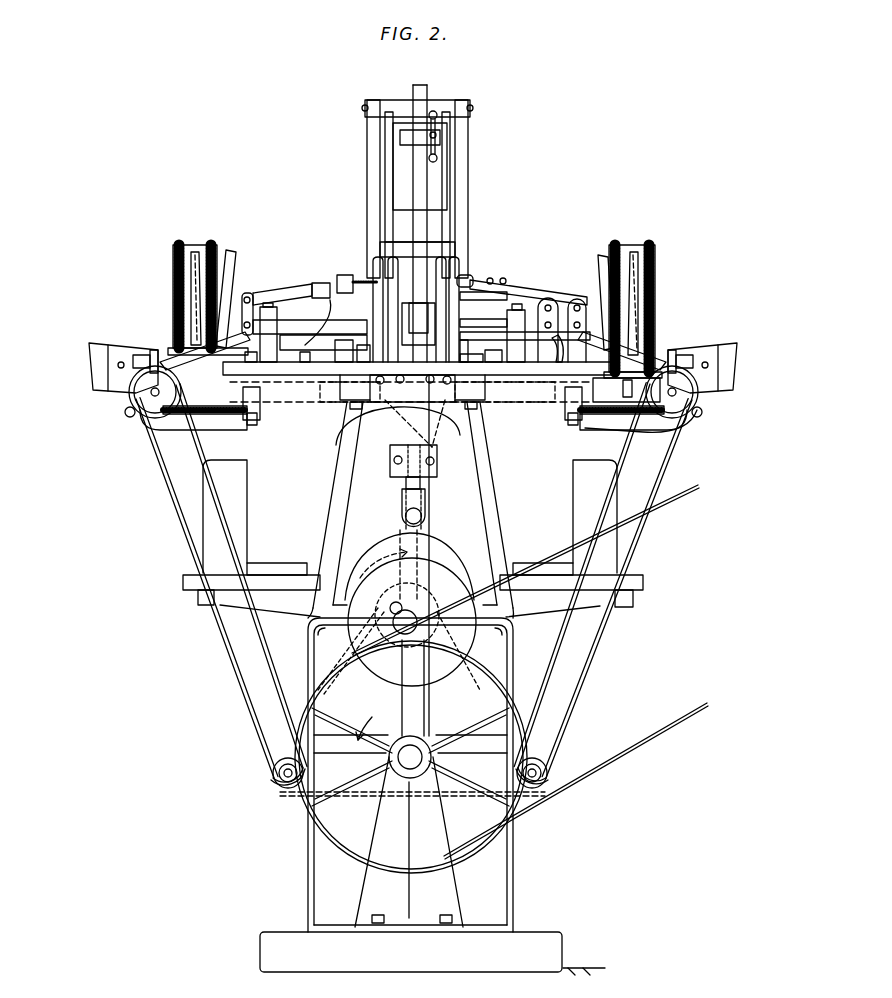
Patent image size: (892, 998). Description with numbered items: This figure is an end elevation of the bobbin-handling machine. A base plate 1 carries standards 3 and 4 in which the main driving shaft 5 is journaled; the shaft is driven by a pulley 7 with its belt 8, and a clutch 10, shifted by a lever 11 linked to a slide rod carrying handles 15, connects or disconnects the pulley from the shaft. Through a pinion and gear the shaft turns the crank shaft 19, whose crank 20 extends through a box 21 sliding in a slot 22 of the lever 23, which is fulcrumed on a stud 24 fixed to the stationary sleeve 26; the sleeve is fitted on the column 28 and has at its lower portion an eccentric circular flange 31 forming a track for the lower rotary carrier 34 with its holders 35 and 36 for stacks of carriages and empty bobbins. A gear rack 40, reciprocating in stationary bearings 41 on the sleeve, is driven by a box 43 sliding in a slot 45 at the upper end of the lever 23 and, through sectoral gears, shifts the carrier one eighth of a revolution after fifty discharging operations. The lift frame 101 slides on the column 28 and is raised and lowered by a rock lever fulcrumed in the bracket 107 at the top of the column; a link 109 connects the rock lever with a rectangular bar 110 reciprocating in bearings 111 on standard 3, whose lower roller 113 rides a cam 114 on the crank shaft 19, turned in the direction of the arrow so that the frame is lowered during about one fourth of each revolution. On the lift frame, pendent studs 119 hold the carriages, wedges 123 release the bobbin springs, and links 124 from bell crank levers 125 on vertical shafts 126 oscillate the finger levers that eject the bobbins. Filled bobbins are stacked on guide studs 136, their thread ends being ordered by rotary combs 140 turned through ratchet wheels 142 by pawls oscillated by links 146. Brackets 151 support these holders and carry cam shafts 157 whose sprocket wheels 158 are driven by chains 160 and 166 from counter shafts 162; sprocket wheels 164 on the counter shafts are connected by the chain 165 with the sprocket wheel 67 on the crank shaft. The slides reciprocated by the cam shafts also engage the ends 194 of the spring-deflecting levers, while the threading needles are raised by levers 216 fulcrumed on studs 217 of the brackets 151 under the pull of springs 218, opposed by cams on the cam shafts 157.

The base plate 1 is at (562, 956).
The standard 3 is at (514, 881).
The standard 4 is at (409, 783).
The main driving shaft 5 is at (410, 762).
The pulley 7 is at (402, 757).
The belt 8 is at (631, 766).
The clutch 10 is at (352, 757).
The lever 11 is at (430, 710).
The handles 15 is at (438, 137).
The crank shaft 19 is at (489, 640).
The crank 20 is at (445, 598).
The box 21 is at (325, 639).
The slot 22 is at (375, 668).
The lever 23 is at (440, 548).
The stud 24 is at (422, 506).
The stationary sleeve 26 is at (337, 438).
The column 28 is at (410, 238).
The circular flange 31 is at (197, 599).
The lower rotary carrier 34 is at (558, 560).
The holders 35 is at (612, 548).
The holders 36 is at (215, 550).
The gear rack 40 is at (498, 432).
The stationary bearings 41 is at (348, 408).
The box 43 is at (340, 462).
The slot 45 is at (420, 430).
The disc 67 is at (425, 600).
The lift frame 101 is at (330, 292).
The bracket 107 is at (452, 180).
The link 109 is at (417, 183).
The rectangular bar 110 is at (398, 426).
The bearings 111 is at (390, 470).
The roller 113 is at (402, 512).
The cam 114 is at (398, 560).
The pendent studs 119 is at (270, 362).
The wedges 123 is at (562, 364).
The links 124 is at (528, 290).
The bell crank levers 125 is at (345, 270).
The vertical shafts 126 is at (357, 281).
The guide studs 136 is at (232, 252).
The rotary combs 140 is at (173, 267).
The ratchet wheel 142 is at (625, 404).
The links 146 is at (675, 404).
The brackets 151 is at (95, 370).
The cam shafts 157 is at (151, 408).
The sprocket wheels 158 is at (135, 398).
The chains 160 is at (595, 645).
The counter shafts 162 is at (273, 773).
The sprocket wheels 164 is at (286, 791).
The chain 165 is at (334, 676).
The belt 166 is at (233, 640).
The ends 194 is at (260, 416).
The levers 216 is at (235, 430).
The studs 217 is at (128, 418).
The springs 218 is at (413, 362).